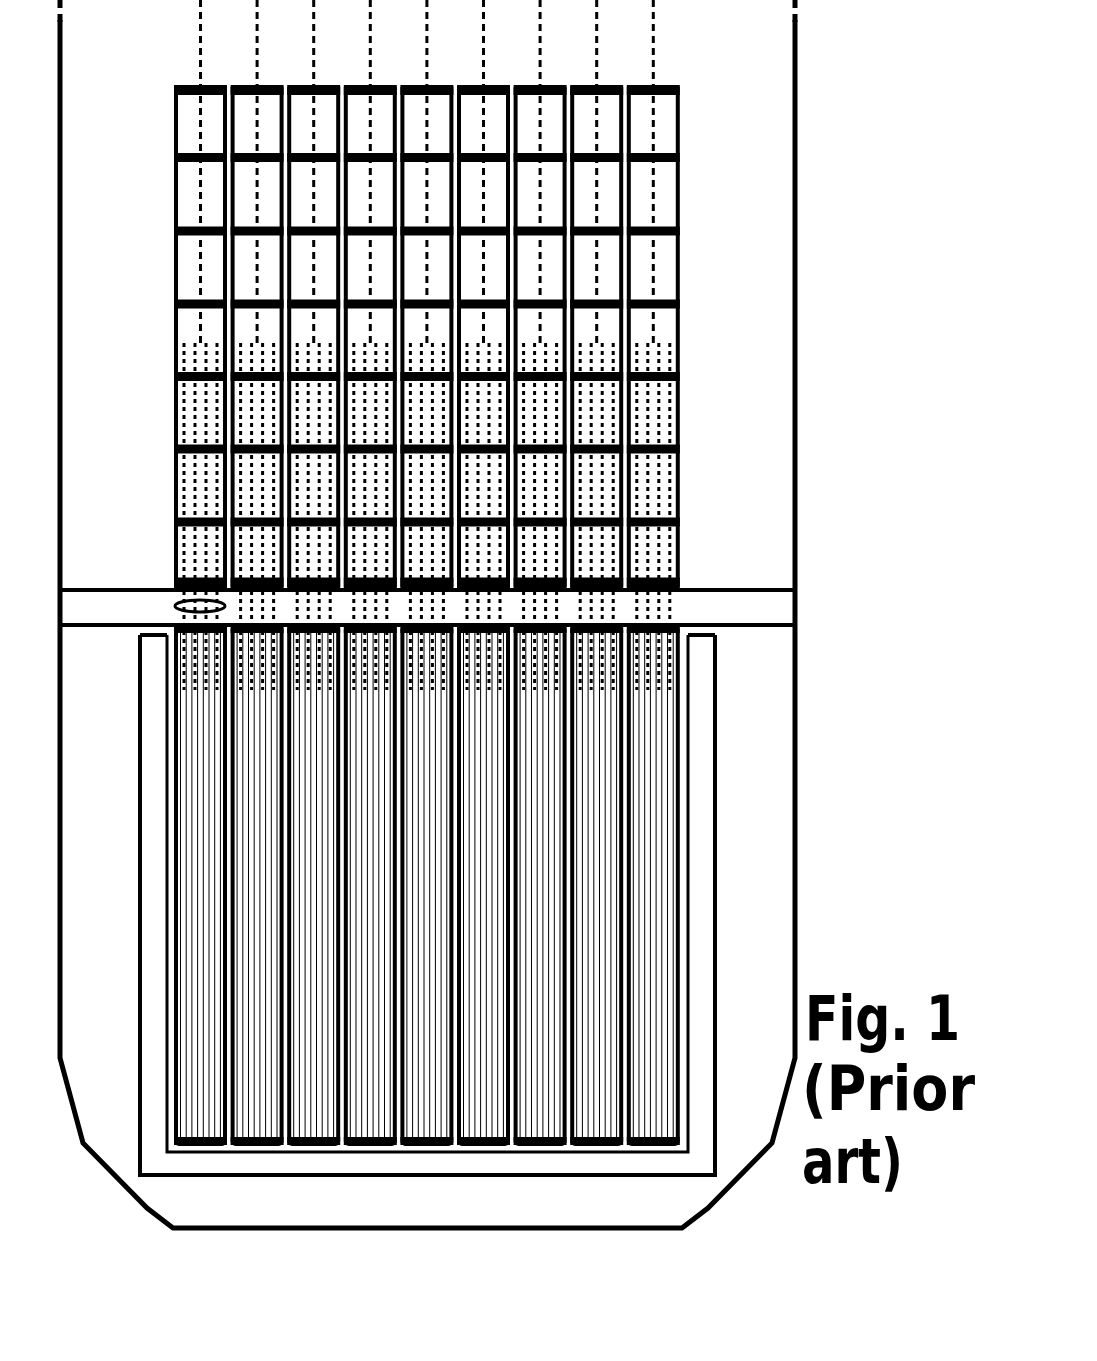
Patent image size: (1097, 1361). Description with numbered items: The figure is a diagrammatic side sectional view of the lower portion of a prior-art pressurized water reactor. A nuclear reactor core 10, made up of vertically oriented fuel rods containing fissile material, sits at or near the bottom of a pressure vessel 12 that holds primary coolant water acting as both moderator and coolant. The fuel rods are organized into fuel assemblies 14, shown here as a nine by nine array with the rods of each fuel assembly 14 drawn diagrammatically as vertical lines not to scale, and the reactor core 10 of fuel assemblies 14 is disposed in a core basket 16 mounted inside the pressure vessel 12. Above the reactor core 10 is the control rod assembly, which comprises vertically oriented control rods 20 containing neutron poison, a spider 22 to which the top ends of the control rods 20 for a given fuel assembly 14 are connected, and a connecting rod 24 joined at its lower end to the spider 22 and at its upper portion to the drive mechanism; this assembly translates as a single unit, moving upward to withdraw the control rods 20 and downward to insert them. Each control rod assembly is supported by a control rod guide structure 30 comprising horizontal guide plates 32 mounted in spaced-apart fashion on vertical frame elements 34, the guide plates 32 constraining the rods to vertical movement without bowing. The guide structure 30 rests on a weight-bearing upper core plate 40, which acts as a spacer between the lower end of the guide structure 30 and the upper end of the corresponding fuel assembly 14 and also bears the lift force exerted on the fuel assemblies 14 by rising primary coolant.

The nuclear reactor core 10 is at (522, 885).
The pressure vessel 12 is at (795, 293).
The fuel assemblies 14 is at (655, 920).
The core basket 16 is at (152, 803).
The control rods 20 is at (173, 607).
The spider 22 is at (195, 345).
The connecting rod 24 is at (200, 268).
The control rod guide structure 30 is at (435, 345).
The guide plates 32 is at (667, 235).
The vertical frame elements 34 is at (630, 197).
The upper core plate 40 is at (722, 605).